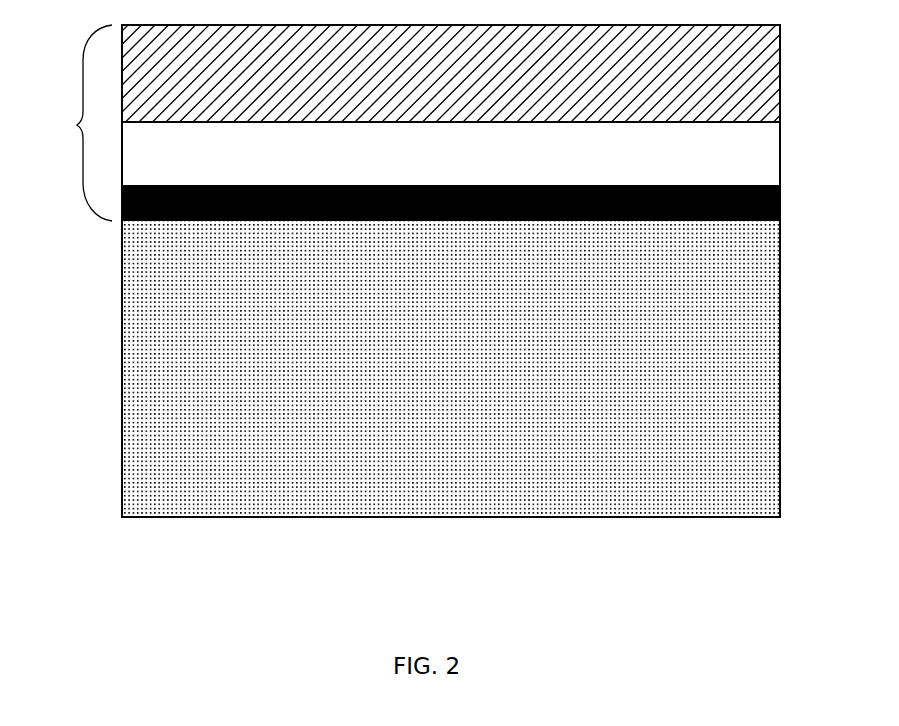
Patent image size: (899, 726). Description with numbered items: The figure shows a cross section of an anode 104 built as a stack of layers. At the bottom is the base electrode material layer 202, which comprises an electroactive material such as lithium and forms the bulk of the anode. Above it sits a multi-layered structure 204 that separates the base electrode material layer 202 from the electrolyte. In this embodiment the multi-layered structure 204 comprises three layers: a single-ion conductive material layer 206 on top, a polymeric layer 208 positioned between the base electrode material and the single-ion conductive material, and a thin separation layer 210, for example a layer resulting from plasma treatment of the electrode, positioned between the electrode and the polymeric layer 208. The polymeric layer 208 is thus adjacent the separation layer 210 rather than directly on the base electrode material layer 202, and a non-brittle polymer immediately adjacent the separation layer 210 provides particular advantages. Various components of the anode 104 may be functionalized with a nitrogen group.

The anode 104 is at (88, 319).
The base electrode material layer 202 is at (743, 359).
The multi-layered structure 204 is at (71, 123).
The single-ion conductive material layer 206 is at (743, 78).
The polymeric layer 208 is at (743, 155).
The separation layer 210 is at (780, 204).